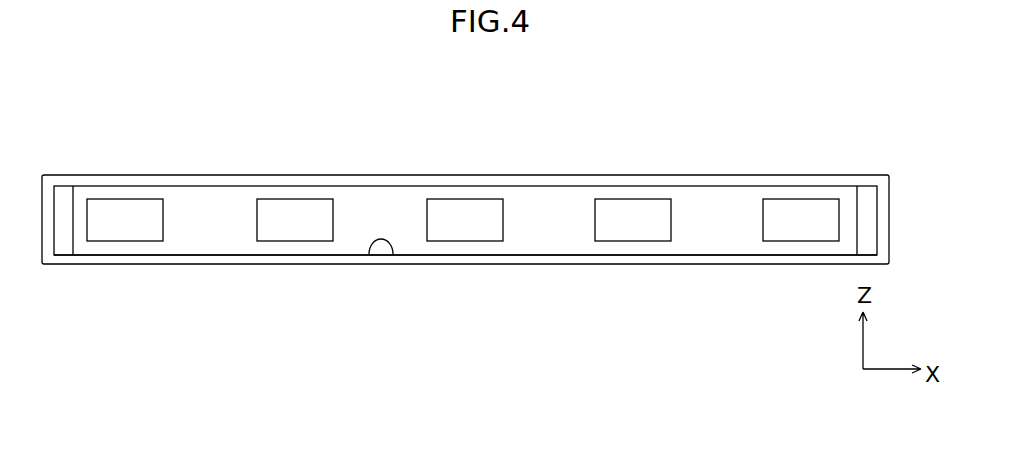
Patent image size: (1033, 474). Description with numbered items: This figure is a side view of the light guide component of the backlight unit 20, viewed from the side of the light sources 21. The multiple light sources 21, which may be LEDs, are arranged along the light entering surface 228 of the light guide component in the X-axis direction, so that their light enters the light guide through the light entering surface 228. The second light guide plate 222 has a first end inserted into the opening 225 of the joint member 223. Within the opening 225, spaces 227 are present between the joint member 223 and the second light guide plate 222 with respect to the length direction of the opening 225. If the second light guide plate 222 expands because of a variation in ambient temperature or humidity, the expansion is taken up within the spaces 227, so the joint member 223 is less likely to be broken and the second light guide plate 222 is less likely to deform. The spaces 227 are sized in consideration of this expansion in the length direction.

The backlight unit 20 is at (199, 153).
The light sources 21 is at (288, 213).
The second light guide plate 222 is at (549, 215).
The joint member 223 is at (845, 178).
The opening 225 is at (393, 253).
The spaces 227 is at (62, 232).
The light entering surface 228 is at (715, 225).